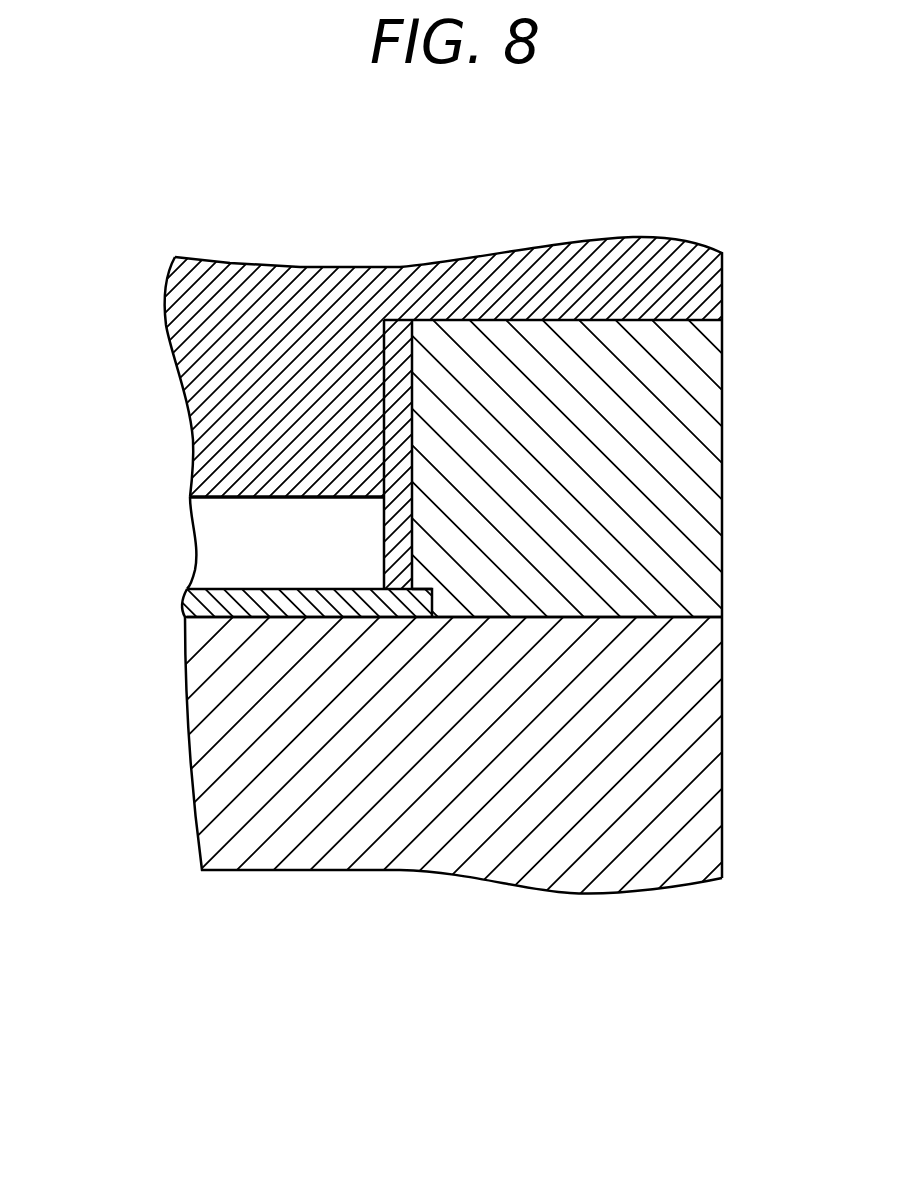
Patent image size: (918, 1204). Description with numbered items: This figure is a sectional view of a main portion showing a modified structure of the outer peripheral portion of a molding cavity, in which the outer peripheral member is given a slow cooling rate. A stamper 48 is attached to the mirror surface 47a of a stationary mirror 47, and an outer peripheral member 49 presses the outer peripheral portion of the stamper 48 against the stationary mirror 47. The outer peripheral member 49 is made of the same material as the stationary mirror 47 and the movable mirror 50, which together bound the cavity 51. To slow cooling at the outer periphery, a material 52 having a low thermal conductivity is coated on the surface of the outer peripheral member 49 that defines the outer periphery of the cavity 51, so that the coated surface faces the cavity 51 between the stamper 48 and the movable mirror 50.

The stationary mirror 47 is at (487, 827).
The mirror surface 47a is at (293, 614).
The stamper 48 is at (240, 601).
The outer peripheral member 49 is at (702, 511).
The movable mirror 50 is at (273, 337).
The cavity 51 is at (240, 497).
The material having a low thermal conductivity 52 is at (397, 344).